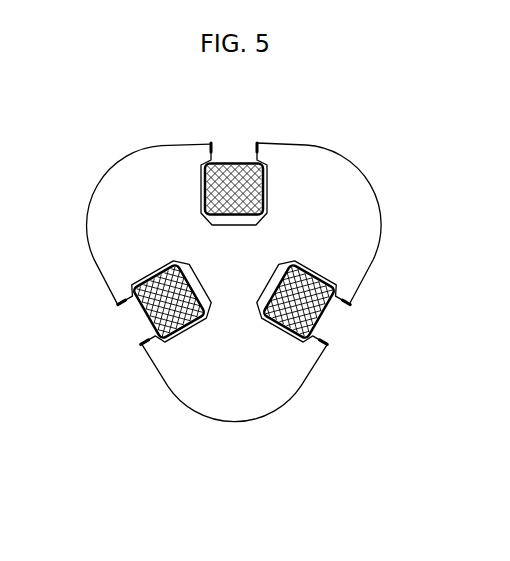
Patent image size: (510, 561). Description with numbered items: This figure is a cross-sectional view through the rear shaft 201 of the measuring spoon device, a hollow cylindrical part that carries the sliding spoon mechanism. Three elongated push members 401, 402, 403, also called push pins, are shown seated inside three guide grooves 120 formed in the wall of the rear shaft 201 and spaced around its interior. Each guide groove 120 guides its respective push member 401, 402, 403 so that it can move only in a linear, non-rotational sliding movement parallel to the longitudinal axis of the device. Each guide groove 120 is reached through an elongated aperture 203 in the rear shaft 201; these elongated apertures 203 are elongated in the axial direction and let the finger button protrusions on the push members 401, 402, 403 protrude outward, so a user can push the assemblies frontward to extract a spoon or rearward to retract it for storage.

The guide groove 120 is at (180, 264).
The rear shaft 201 is at (303, 397).
The elongated aperture 203 is at (245, 148).
The elongated push member 401 is at (147, 315).
The elongated push member 402 is at (229, 163).
The elongated push member 403 is at (322, 312).